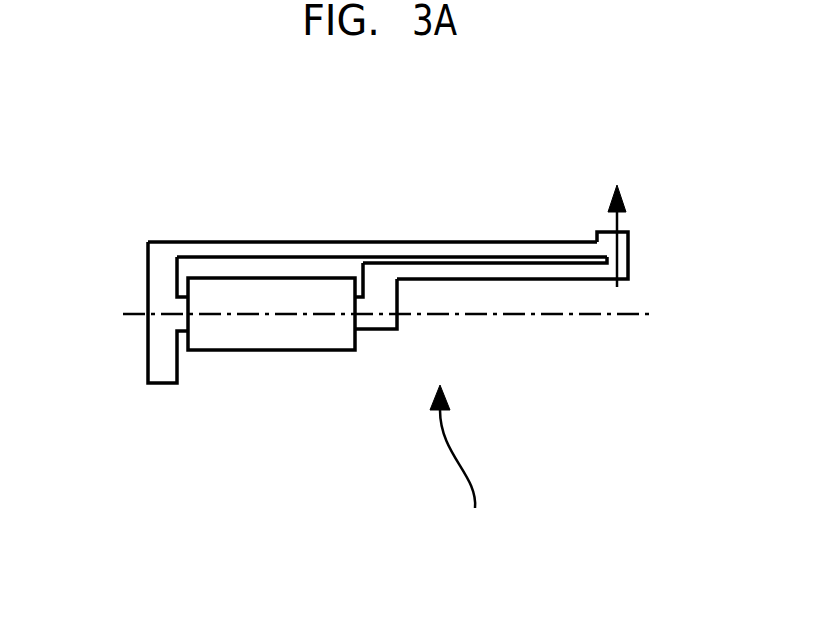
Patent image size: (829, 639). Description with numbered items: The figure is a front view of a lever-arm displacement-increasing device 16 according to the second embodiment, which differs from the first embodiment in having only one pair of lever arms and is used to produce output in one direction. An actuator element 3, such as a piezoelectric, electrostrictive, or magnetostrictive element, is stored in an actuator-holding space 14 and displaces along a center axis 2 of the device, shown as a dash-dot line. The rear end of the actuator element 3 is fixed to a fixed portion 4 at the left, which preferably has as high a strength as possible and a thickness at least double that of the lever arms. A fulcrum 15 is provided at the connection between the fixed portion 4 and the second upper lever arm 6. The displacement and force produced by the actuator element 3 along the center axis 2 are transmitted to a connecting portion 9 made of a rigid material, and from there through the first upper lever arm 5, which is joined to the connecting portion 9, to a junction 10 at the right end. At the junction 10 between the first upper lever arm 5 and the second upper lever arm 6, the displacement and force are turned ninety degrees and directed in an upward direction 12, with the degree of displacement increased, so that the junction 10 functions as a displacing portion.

The center axis 2 is at (137, 318).
The actuator element 3 is at (292, 333).
The fixed portion 4 is at (158, 290).
The first upper lever arm 5 is at (495, 273).
The second upper lever arm 6 is at (428, 255).
The connecting portion 9 is at (362, 307).
The junction 10 is at (627, 265).
The upward direction 12 is at (615, 219).
The actuator-holding space 14 is at (233, 272).
The fulcrum 15 is at (158, 255).
The lever-arm displacement-increasing device 16 is at (461, 544).